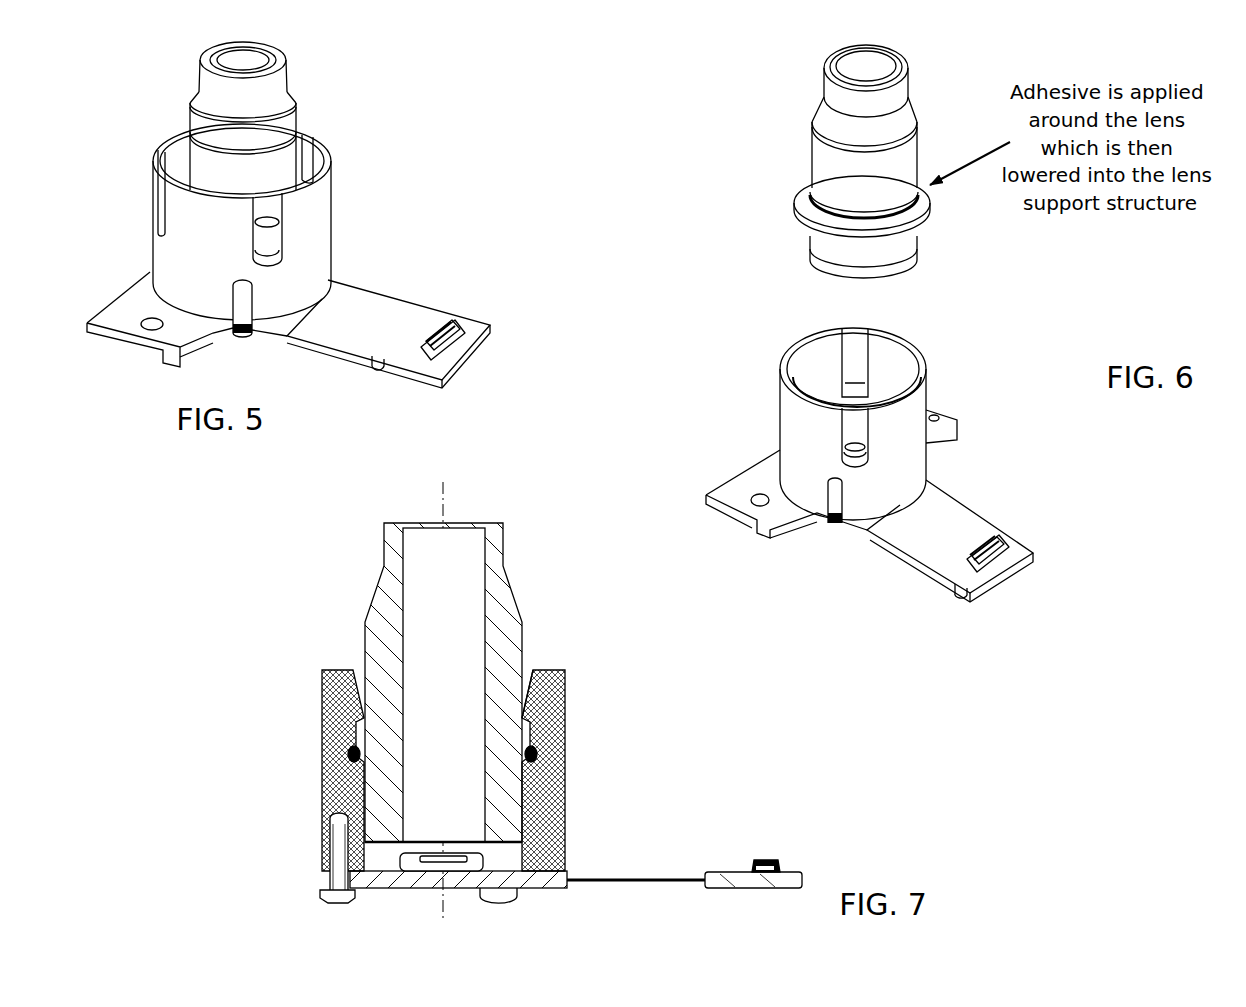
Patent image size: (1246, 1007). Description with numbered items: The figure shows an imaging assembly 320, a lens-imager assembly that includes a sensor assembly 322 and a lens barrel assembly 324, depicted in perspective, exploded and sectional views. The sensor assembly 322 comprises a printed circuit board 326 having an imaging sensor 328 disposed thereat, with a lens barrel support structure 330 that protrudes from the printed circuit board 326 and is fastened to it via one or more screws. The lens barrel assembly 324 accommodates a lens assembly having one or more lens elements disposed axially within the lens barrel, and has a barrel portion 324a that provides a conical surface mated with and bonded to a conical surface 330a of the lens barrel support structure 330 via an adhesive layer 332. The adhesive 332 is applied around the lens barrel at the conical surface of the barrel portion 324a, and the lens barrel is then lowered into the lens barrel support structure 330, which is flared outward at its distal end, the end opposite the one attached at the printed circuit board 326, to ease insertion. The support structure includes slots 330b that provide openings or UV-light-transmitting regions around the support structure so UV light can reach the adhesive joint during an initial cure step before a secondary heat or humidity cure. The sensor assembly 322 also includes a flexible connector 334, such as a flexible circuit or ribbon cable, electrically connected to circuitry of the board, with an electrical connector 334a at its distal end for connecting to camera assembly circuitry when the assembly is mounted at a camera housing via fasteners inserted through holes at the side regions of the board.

In FIG. 5, the imaging assembly 320 is at (360, 115).
In FIG. 7, the imaging assembly 320 is at (286, 627).
In FIG. 5, the sensor assembly 322 is at (387, 265).
In FIG. 6, the sensor assembly 322 is at (843, 553).
In FIG. 7, the sensor assembly 322 is at (299, 875).
In FIG. 5, the lens barrel assembly 324 is at (190, 120).
In FIG. 6, the lens barrel assembly 324 is at (810, 120).
In FIG. 7, the lens barrel assembly 324 is at (521, 605).
In FIG. 7, the barrel portion 324a is at (357, 764).
In FIG. 5, the printed circuit board 326 is at (170, 328).
In FIG. 6, the printed circuit board 326 is at (757, 483).
In FIG. 7, the printed circuit board 326 is at (517, 883).
In FIG. 7, the imaging sensor 328 is at (437, 864).
In FIG. 5, the lens barrel support structure 330 is at (332, 208).
In FIG. 6, the lens barrel support structure 330 is at (913, 417).
In FIG. 7, the lens barrel support structure 330 is at (323, 737).
In FIG. 6, the conical surface 330a is at (817, 378).
In FIG. 7, the conical surface 330a is at (538, 718).
In FIG. 6, the slots 330b is at (852, 347).
In FIG. 7, the adhesive layer 332 is at (532, 765).
In FIG. 5, the flexible connector 334 is at (393, 313).
In FIG. 6, the flexible connector 334 is at (970, 522).
In FIG. 7, the flexible connector 334 is at (623, 873).
In FIG. 5, the electrical connector 334a is at (455, 345).
In FIG. 6, the electrical connector 334a is at (1008, 547).
In FIG. 7, the electrical connector 334a is at (777, 870).